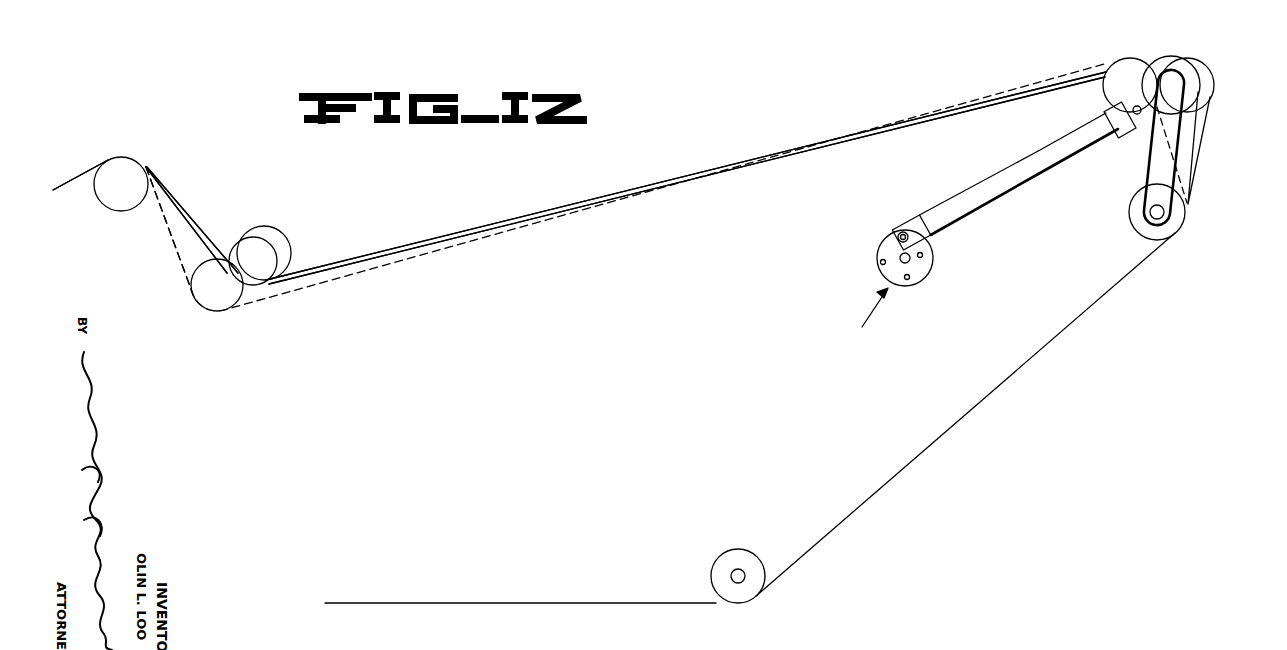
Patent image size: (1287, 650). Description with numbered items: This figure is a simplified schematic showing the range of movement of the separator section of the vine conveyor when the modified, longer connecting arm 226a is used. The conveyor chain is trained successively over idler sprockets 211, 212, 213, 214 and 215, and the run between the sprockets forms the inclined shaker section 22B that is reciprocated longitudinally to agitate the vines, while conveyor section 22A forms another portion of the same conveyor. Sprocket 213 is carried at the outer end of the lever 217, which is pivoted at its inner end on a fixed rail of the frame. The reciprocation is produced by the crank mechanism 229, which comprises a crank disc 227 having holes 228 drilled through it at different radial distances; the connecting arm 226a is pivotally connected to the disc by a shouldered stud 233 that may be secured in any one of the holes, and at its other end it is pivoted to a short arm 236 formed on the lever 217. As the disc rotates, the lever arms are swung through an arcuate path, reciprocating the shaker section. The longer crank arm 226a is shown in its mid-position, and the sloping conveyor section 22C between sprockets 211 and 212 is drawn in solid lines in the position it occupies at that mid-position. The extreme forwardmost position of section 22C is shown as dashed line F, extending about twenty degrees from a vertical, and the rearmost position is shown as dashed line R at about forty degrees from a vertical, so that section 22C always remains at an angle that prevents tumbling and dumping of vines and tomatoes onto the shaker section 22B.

The idler sprocket 211 is at (118, 211).
The idler sprocket 212 is at (238, 243).
The idler sprocket 213 is at (1168, 57).
The idler sprocket 214 is at (1138, 228).
The idler sprocket 215 is at (742, 548).
The lever 217 is at (1155, 174).
The conveyor section 22A is at (140, 163).
The shaker section 22B is at (958, 110).
The sloping conveyor section 22C is at (163, 192).
The connecting arm 226a is at (987, 192).
The crank disc 227 is at (931, 274).
The holes 228 is at (910, 279).
The crank mechanism 229 is at (865, 322).
The shouldered stud 233 is at (902, 231).
The short arm 236 is at (1140, 127).
The dashed line R is at (197, 220).
The dashed line F is at (173, 242).